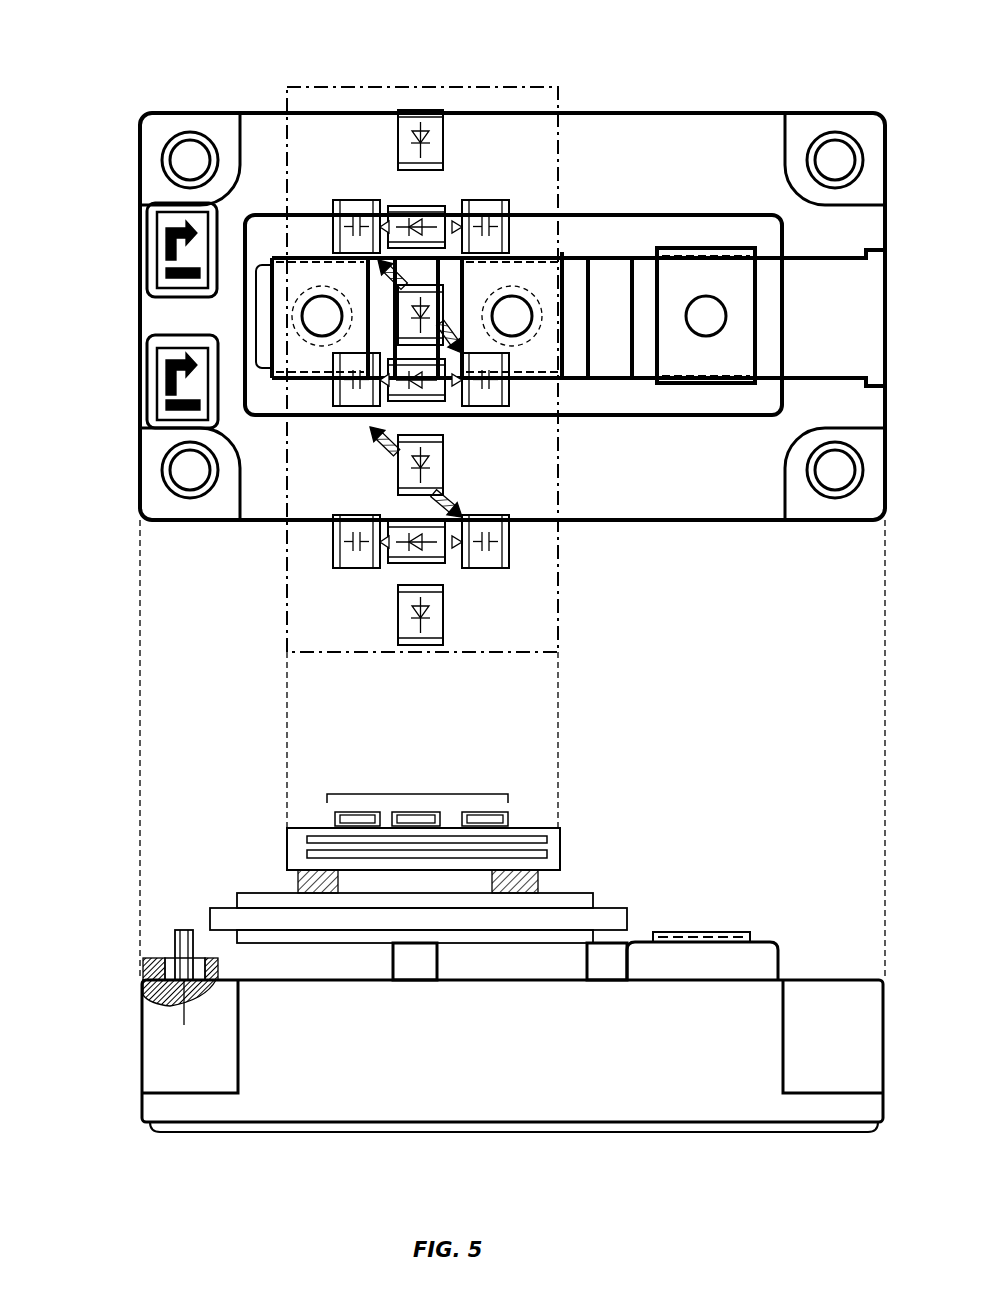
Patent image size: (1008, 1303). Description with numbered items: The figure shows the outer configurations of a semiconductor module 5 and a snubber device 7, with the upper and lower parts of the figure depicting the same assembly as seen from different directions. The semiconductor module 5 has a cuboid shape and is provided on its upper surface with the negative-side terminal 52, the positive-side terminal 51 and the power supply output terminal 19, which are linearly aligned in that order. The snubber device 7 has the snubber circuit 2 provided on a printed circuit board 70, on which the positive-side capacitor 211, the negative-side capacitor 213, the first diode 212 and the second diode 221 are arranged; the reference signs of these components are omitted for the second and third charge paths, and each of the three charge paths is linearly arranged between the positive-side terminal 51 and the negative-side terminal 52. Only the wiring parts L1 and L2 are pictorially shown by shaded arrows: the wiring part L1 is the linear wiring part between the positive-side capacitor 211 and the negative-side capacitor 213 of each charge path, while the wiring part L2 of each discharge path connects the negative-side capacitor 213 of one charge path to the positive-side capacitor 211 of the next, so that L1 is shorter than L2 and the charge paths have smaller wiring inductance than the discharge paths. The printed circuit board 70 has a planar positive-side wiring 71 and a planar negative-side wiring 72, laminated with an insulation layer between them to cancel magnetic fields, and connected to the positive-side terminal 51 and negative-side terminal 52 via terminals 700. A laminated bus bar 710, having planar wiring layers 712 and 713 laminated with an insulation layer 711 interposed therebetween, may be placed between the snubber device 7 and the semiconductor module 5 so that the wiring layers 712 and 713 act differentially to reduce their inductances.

The snubber circuit 2 is at (556, 95).
The semiconductor module 5 is at (640, 113).
The snubber device 7 is at (447, 773).
The power supply output terminal 19 is at (757, 322).
The positive-side terminal 51 is at (595, 256).
The negative-side terminal 52 is at (277, 385).
The printed circuit board 70 is at (415, 838).
The positive-side wiring 71 is at (557, 840).
The negative-side wiring 72 is at (557, 855).
The positive-side capacitor 211 is at (484, 200).
The first diode 212 is at (416, 207).
The negative-side capacitor 213 is at (352, 203).
The second diode 221 is at (444, 140).
The terminals 700 is at (565, 349).
The laminated bus bar 710 is at (329, 919).
The insulation layer 711 is at (210, 918).
The wiring layer 712 is at (237, 900).
The wiring layer 713 is at (237, 937).
The wiring part L1 is at (452, 222).
The wiring part L2 is at (385, 270).